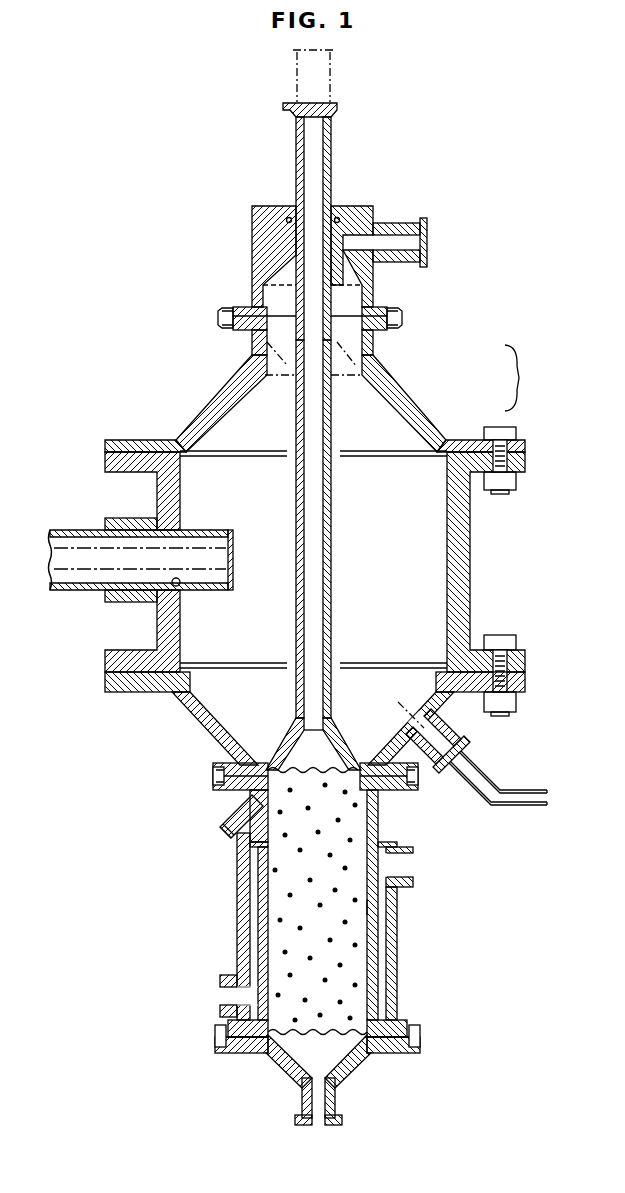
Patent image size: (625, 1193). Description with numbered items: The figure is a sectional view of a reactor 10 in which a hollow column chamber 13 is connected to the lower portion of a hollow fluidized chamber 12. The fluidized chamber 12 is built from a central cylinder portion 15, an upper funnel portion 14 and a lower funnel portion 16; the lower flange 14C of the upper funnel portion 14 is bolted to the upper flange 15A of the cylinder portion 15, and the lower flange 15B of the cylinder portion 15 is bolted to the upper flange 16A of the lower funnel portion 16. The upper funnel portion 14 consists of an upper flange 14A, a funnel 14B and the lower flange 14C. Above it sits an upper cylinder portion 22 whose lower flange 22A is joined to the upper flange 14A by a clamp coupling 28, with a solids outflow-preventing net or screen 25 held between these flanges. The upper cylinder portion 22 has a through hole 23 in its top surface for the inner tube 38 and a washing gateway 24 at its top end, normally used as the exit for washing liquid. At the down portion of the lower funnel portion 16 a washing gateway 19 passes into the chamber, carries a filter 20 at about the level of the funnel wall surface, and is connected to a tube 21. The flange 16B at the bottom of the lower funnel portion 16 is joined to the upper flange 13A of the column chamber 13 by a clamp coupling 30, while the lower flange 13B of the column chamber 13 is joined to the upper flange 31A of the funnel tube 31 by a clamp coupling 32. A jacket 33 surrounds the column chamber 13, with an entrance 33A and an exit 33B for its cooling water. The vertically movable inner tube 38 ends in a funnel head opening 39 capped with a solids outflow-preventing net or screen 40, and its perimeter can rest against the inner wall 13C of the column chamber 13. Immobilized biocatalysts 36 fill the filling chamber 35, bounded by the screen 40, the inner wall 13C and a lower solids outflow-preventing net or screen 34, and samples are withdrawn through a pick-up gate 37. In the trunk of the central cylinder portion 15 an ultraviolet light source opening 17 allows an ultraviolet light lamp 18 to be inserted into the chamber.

The reactor 10 is at (80, 330).
The fluidized chamber 12 is at (432, 573).
The column chamber 13 is at (418, 995).
The upper flange of column chamber 13A is at (405, 792).
The lower flange of column chamber 13B is at (400, 1024).
The inner wall of column chamber 13C is at (392, 906).
The upper funnel portion 14 is at (529, 378).
The upper flange of upper funnel portion 14A is at (388, 330).
The funnel 14B is at (412, 402).
The lower flange of upper funnel portion 14C is at (470, 442).
The central cylinder portion 15 is at (460, 611).
The upper flange of cylinder portion 15A is at (525, 461).
The lower flange of cylinder portion 15B is at (525, 665).
The lower funnel portion 16 is at (445, 713).
The upper flange of lower funnel portion 16A is at (142, 692).
The flange of lower funnel portion 16B is at (224, 764).
The ultraviolet light source opening 17 is at (181, 586).
The ultraviolet light lamp 18 is at (70, 530).
The washing gateway 19 is at (434, 773).
The filter 20 is at (408, 711).
The tube 21 is at (525, 808).
The upper cylinder portion 22 is at (252, 237).
The lower flange of upper cylinder portion 22A is at (232, 312).
The through hole 23 is at (333, 201).
The washing gateway 24 is at (421, 222).
The solids outflow-preventing net or screen 25 is at (266, 347).
The clamp coupling 28 is at (404, 318).
The clamp coupling 30 is at (213, 777).
The funnel tube 31 is at (342, 1119).
The upper flange of funnel tube 31A is at (378, 1073).
The clamp coupling 32 is at (416, 1051).
The jacket 33 is at (383, 951).
The cooling water entrance 33A is at (220, 996).
The cooling water exit 33B is at (414, 867).
The solids outflow-preventing net or screen 34 is at (290, 1040).
The filling chamber 35 is at (283, 909).
The immobilized biocatalysts 36 is at (283, 953).
The pick-up gate 37 is at (230, 833).
The inner tube 38 is at (332, 556).
The funnel head opening 39 is at (285, 750).
The solids outflow-preventing net or screen 40 is at (243, 806).